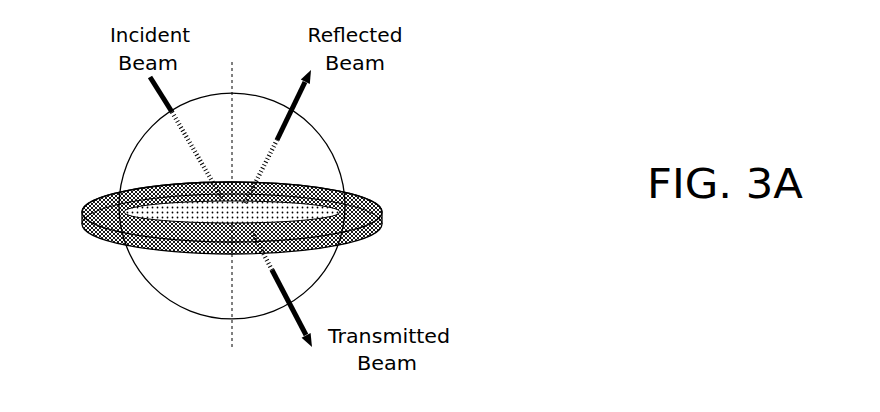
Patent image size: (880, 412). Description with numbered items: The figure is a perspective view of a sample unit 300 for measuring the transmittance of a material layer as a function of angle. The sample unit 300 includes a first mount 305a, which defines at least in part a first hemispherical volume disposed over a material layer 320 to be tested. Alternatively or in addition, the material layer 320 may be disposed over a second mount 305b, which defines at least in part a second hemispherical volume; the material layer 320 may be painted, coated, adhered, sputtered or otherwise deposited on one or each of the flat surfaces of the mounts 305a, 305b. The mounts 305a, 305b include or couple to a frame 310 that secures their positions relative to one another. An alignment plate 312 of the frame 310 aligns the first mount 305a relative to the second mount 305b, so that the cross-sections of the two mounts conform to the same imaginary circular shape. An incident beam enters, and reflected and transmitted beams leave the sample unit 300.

The sample unit 300 is at (510, 80).
The first mount 305a is at (332, 176).
The second mount 305b is at (217, 286).
The frame 310 is at (80, 216).
The alignment plate 312 is at (362, 202).
The material layer 320 is at (160, 207).